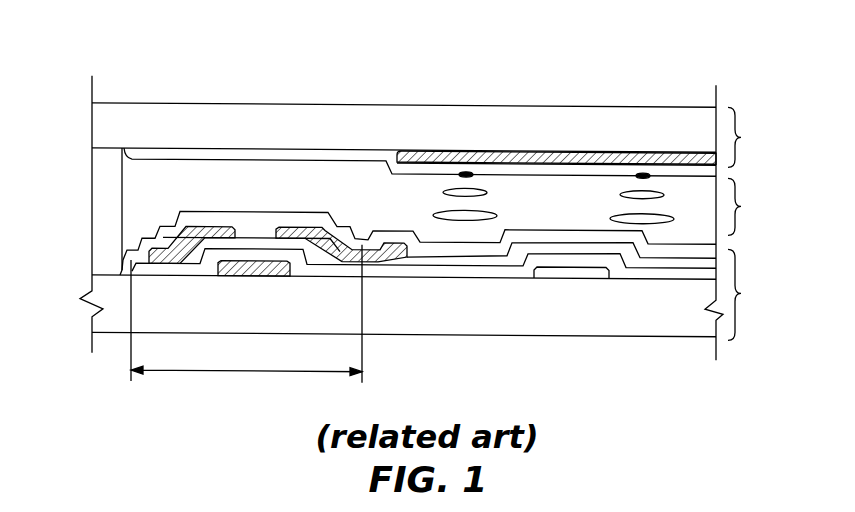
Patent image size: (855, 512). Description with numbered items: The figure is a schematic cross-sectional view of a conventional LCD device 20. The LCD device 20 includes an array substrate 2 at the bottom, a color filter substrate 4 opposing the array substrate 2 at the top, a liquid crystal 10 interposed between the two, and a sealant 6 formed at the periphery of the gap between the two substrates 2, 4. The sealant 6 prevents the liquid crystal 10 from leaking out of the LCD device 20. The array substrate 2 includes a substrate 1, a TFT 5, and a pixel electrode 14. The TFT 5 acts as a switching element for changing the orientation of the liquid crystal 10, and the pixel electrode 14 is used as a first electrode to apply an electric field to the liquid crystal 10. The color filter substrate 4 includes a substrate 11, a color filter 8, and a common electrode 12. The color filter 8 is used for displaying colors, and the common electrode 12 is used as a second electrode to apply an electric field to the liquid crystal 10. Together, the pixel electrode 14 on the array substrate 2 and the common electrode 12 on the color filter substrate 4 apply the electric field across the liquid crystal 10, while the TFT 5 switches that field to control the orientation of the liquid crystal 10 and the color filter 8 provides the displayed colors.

The LCD device 20 is at (250, 92).
The color filter 8 is at (597, 155).
The common electrode 12 is at (691, 163).
The substrate 11 is at (420, 145).
The color filter substrate 4 is at (429, 135).
The sealant 6 is at (98, 208).
The liquid crystal 10 is at (604, 205).
The pixel electrode 14 is at (708, 262).
The array substrate 2 is at (426, 293).
The substrate 1 is at (466, 317).
The TFT 5 is at (246, 313).